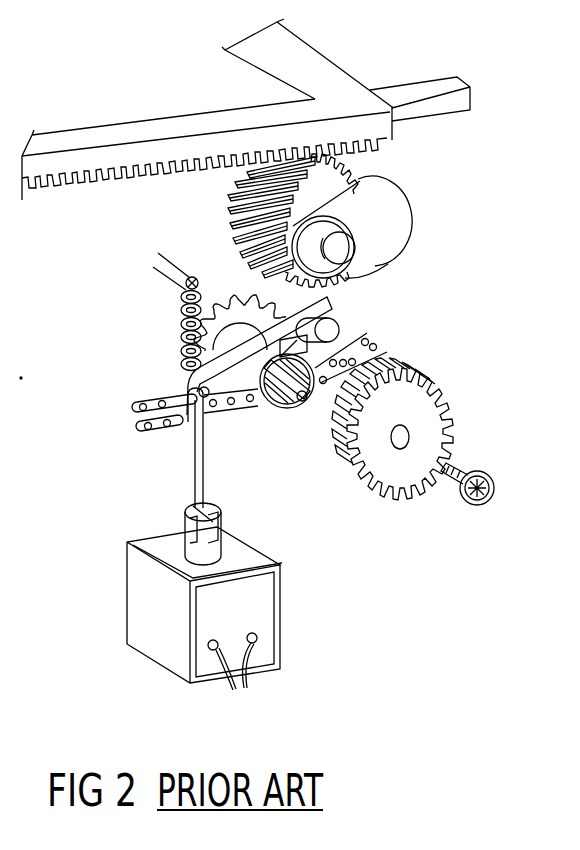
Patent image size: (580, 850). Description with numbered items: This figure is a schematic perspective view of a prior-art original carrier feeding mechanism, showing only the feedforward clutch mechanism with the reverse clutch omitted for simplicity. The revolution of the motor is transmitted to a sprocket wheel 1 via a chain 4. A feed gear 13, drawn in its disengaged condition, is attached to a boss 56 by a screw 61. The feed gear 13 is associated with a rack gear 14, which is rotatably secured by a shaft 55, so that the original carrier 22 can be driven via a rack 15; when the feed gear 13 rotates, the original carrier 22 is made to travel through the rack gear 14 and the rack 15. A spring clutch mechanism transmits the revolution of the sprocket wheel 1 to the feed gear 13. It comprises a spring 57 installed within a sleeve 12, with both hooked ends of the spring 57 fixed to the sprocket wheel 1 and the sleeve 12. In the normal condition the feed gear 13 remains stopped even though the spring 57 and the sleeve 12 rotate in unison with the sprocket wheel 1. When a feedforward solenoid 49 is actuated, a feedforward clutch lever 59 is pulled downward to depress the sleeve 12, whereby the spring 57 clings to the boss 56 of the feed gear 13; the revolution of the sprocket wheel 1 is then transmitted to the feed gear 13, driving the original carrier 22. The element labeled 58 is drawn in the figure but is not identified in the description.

The sprocket wheel 1 is at (232, 300).
The chain 4 is at (385, 336).
The sleeve 12 is at (250, 388).
The feed gear 13 is at (435, 427).
The rack gear 14 is at (325, 199).
The rack 15 is at (382, 146).
The original carrier 22 is at (312, 68).
The feedforward solenoid 49 is at (258, 607).
The shaft 55 is at (343, 256).
The boss 56 is at (308, 422).
The spring 57 is at (280, 416).
The spring 58 is at (175, 338).
The feedforward clutch lever 59 is at (170, 388).
The screw 61 is at (483, 502).